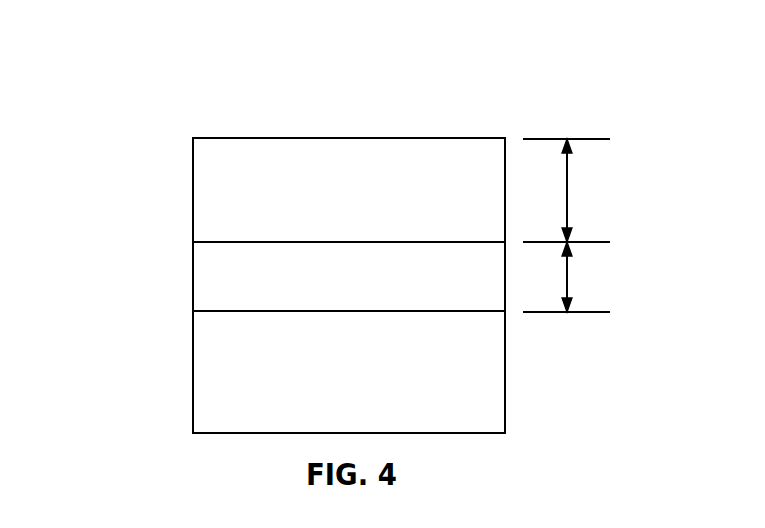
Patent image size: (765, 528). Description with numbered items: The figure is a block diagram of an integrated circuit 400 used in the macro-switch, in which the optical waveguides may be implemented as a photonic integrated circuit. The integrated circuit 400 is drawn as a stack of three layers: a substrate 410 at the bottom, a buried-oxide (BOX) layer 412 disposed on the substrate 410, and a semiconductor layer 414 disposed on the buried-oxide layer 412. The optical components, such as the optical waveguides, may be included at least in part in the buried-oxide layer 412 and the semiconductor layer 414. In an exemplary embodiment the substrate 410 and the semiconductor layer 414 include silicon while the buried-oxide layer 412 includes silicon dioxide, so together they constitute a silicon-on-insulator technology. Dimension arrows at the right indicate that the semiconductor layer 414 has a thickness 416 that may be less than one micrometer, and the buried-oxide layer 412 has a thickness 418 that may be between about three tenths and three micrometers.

The integrated circuit 400 is at (190, 85).
The substrate 410 is at (365, 406).
The buried-oxide (BOX) layer 412 is at (365, 299).
The semiconductor layer 414 is at (365, 224).
The thickness 416 is at (568, 203).
The thickness 418 is at (568, 279).